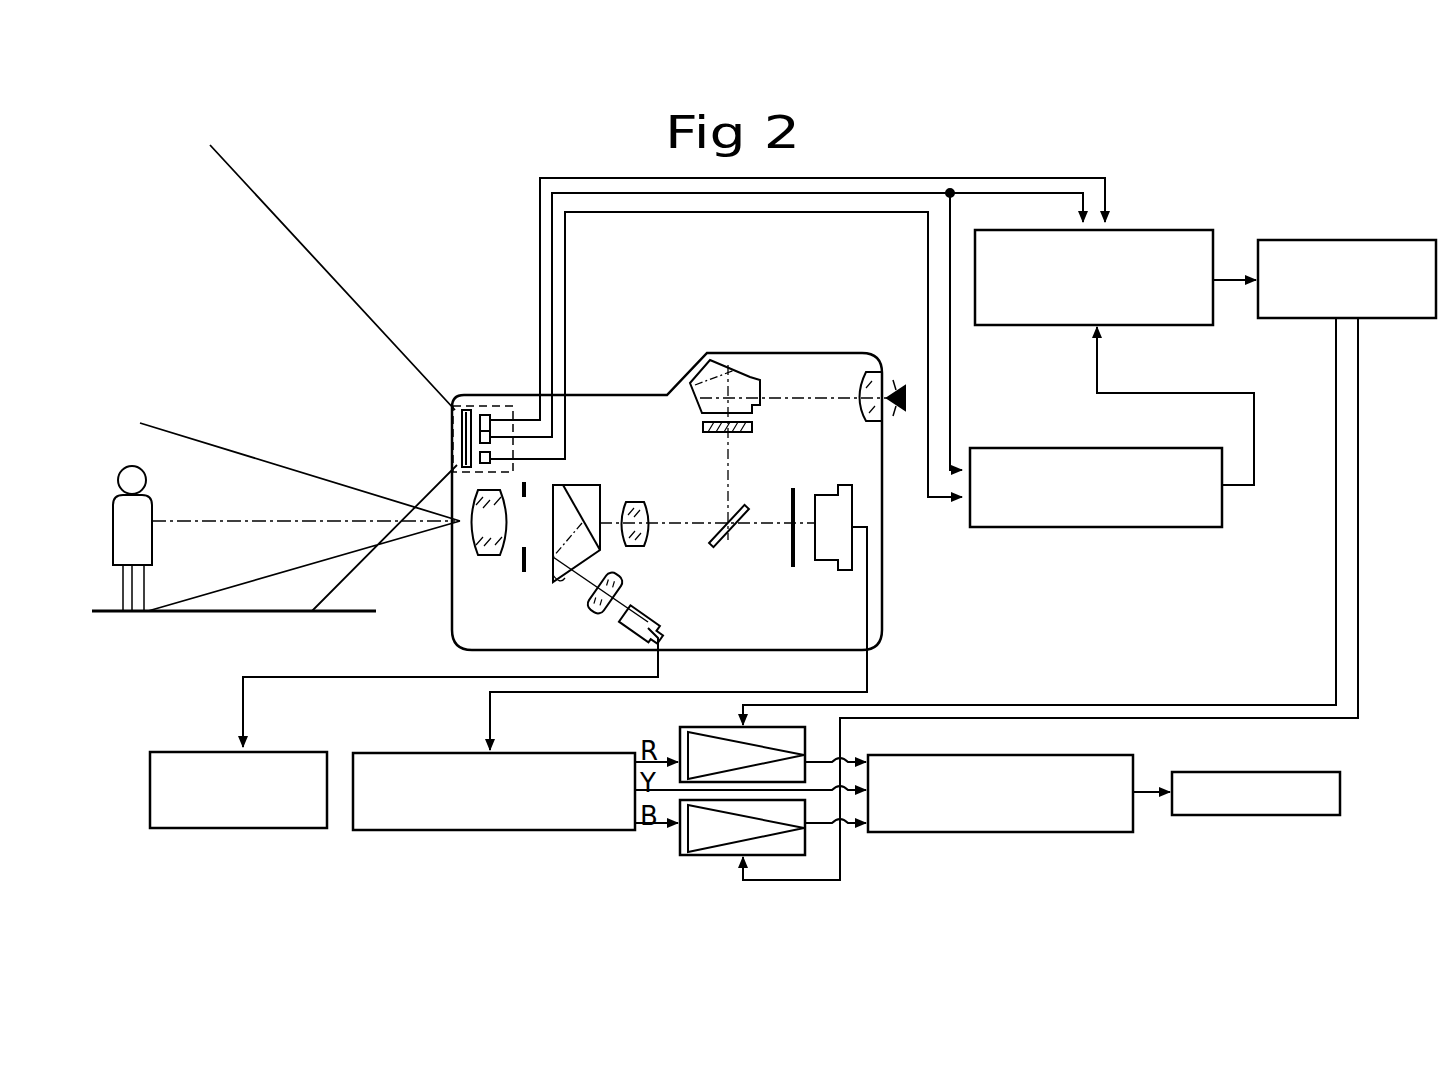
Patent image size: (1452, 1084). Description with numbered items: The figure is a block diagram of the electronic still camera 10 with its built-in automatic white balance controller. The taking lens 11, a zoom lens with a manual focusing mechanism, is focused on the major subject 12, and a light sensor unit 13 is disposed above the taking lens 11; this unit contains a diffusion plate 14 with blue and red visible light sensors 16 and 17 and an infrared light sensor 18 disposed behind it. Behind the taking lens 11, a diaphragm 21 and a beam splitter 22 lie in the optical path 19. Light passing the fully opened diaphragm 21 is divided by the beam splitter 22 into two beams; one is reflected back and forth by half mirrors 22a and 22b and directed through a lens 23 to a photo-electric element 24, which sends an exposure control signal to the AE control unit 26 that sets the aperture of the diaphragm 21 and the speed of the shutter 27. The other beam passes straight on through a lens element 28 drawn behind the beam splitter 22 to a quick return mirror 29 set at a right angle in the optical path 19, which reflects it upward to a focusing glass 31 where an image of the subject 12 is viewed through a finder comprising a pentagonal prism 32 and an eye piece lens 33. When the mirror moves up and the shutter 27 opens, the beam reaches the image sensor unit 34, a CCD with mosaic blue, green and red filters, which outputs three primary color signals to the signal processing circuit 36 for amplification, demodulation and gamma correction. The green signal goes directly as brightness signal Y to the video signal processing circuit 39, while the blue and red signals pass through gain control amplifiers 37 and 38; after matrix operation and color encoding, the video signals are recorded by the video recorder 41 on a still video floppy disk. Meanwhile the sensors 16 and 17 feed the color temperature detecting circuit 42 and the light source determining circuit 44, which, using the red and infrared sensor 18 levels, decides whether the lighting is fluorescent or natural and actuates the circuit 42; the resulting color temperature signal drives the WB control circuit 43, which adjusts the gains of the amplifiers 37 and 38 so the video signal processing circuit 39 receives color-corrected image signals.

The camera 10 is at (605, 392).
The taking lens 11 is at (489, 560).
The subject 12 is at (133, 605).
The light sensor unit 13 is at (450, 440).
The diffusion plate 14 is at (460, 410).
The blue visible light sensor 16 is at (487, 415).
The red visible light sensor 17 is at (483, 452).
The infrared light sensor 18 is at (530, 460).
The optical path 19 is at (249, 520).
The diaphragm 21 is at (522, 572).
The beam splitter 22 is at (598, 483).
The half mirror 22a is at (590, 512).
The half mirror 22b is at (570, 575).
The lens 23 is at (615, 578).
The photo-electric element 24 is at (655, 630).
The AE control unit 26 is at (218, 832).
The shutter 27 is at (790, 560).
The relay lens 28 is at (640, 500).
The quick return mirror 29 is at (735, 540).
The focusing glass 31 is at (715, 437).
The pentagonal prism 32 is at (700, 375).
The eye piece lens 33 is at (858, 400).
The image sensor unit 34 is at (835, 555).
The signal processing circuit 36 is at (484, 834).
The gain control amplifier 37 is at (688, 726).
The gain control amplifier 38 is at (688, 856).
The video signal processing circuit 39 is at (996, 835).
The video recorder 41 is at (1255, 818).
The color temperature detecting circuit 42 is at (1160, 230).
The WB control circuit 43 is at (1355, 240).
The light source determining circuit 44 is at (1052, 530).